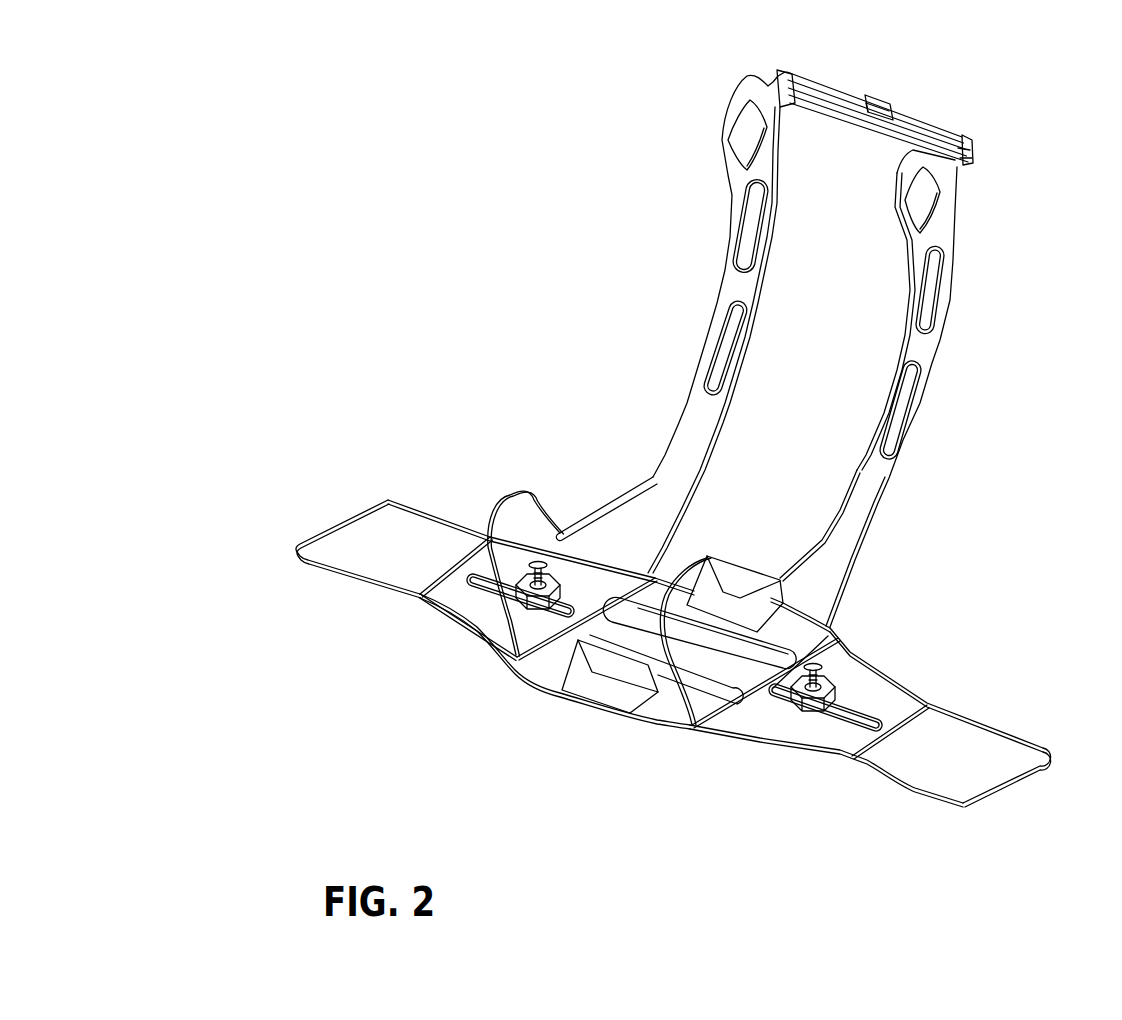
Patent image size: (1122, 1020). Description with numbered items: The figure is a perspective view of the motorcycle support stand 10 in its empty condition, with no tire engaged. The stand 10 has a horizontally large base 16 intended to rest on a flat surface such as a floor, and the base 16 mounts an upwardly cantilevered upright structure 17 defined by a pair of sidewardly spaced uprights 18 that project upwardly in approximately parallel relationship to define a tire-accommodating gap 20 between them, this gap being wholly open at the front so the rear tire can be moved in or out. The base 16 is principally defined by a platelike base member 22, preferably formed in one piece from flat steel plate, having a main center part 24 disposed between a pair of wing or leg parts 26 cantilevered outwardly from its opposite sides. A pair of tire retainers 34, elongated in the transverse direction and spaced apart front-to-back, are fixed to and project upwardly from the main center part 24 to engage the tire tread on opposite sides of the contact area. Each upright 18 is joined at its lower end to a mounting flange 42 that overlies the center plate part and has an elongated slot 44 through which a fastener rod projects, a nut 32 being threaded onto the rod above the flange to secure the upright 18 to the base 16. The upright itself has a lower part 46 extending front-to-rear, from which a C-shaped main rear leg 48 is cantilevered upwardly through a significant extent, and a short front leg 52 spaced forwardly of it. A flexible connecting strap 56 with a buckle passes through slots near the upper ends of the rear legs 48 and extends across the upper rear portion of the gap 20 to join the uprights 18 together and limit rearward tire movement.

The motorcycle support stand 10 is at (1000, 423).
The base 16 is at (658, 763).
The upright structure 17 is at (648, 302).
The upright 18 is at (688, 402).
The tire-accommodating gap 20 is at (860, 273).
The base member 22 is at (408, 496).
The main center part 24 is at (536, 674).
The wing or leg part 26 is at (344, 555).
The nut 32 is at (828, 697).
The tire retainer 34 is at (593, 690).
The mounting flange 42 is at (455, 598).
The slot 44 is at (863, 723).
The lower part 46 is at (622, 520).
The main rear leg 48 is at (742, 277).
The front leg 52 is at (522, 508).
The connecting strap 56 is at (921, 120).